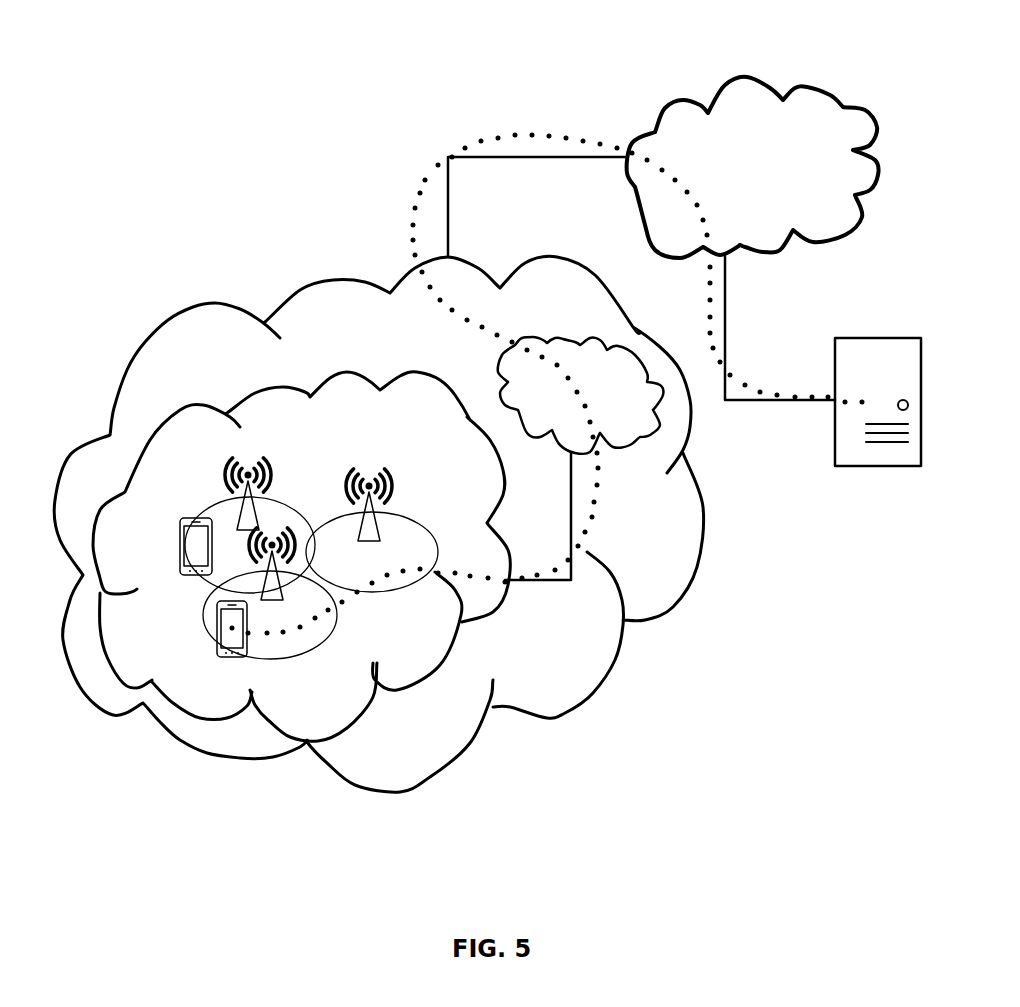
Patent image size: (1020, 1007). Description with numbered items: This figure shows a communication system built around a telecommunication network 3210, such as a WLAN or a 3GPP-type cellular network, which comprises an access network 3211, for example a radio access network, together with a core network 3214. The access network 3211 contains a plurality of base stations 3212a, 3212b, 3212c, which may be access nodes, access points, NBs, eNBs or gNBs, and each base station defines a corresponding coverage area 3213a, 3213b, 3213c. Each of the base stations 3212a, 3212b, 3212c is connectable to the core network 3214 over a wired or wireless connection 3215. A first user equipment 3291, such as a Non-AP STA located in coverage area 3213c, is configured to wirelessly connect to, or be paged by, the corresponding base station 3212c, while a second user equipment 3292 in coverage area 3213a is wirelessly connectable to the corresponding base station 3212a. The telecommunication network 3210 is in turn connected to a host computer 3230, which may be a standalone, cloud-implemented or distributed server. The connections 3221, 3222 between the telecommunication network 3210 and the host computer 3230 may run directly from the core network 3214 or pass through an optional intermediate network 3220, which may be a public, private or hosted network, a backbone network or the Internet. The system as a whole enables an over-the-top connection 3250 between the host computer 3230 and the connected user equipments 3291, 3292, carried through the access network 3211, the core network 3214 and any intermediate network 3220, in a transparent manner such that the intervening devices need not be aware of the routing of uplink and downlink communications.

The telecommunication network 3210 is at (401, 325).
The access network 3211 is at (356, 434).
The base station 3212a is at (281, 600).
The base station 3212b is at (395, 484).
The base station 3212c is at (228, 484).
The coverage area 3213a is at (337, 600).
The coverage area 3213b is at (440, 553).
The coverage area 3213c is at (200, 508).
The core network 3214 is at (652, 403).
The connection 3215 is at (575, 496).
The intermediate network 3220 is at (774, 181).
The connection 3221 is at (535, 157).
The connection 3222 is at (780, 401).
The host computer 3230 is at (878, 419).
The OTT connection 3250 is at (423, 182).
The first user equipment 3291 is at (181, 548).
The second user equipment 3292 is at (215, 654).